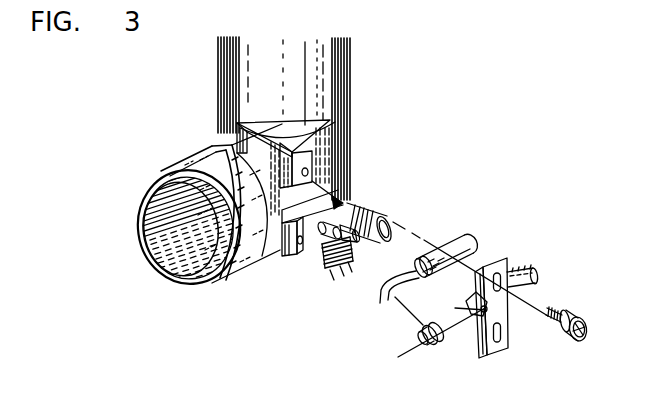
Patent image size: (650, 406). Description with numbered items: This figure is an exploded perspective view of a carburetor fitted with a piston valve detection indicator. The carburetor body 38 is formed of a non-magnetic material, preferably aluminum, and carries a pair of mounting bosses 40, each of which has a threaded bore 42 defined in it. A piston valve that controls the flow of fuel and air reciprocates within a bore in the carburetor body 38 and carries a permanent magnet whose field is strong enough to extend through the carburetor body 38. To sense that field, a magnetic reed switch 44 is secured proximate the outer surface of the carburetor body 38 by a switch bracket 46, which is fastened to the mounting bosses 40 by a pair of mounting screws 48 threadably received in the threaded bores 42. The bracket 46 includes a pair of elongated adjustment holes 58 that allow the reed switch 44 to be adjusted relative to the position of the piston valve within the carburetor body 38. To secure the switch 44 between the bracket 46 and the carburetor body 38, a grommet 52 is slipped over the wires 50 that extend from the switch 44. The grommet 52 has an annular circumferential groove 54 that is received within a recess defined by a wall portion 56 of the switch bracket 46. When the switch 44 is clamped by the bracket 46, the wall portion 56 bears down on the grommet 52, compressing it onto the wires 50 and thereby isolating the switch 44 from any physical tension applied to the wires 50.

The carburetor body 38 is at (182, 160).
The mounting bosses 40 is at (310, 251).
The threaded bore 42 is at (309, 172).
The magnetic reed switch 44 is at (466, 233).
The switch bracket 46 is at (528, 279).
The mounting screws 48 is at (586, 323).
The wires 50 is at (408, 273).
The grommet 52 is at (418, 338).
The annular circumferential groove 54 is at (432, 345).
The wall portion 56 is at (474, 314).
The elongated adjustment holes 58 is at (499, 338).